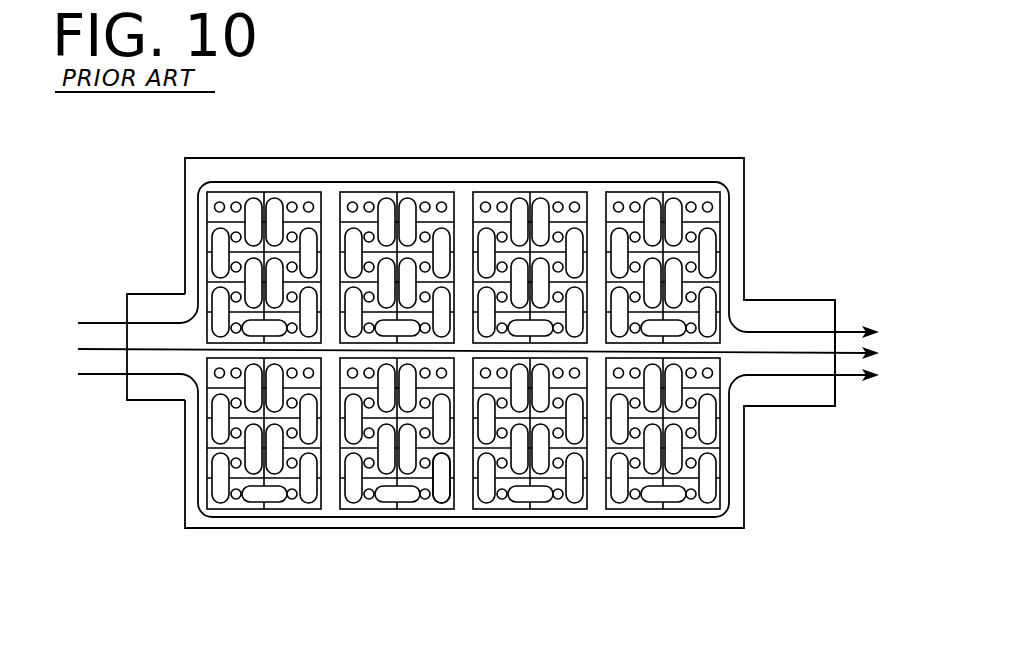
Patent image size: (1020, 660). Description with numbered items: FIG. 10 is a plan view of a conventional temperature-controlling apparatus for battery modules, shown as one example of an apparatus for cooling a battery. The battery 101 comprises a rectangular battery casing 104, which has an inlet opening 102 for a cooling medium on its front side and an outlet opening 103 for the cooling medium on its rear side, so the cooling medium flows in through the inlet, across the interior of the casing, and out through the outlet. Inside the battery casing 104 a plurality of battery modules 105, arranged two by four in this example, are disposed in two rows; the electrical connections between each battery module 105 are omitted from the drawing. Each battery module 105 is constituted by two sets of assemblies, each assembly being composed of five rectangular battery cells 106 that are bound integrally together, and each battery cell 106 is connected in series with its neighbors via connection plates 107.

The battery 101 is at (500, 342).
The inlet opening 102 is at (165, 294).
The outlet opening 103 is at (780, 298).
The battery casing 104 is at (457, 158).
The battery module 105 is at (362, 192).
The battery cell 106 is at (227, 503).
The connection plate 107 is at (442, 495).